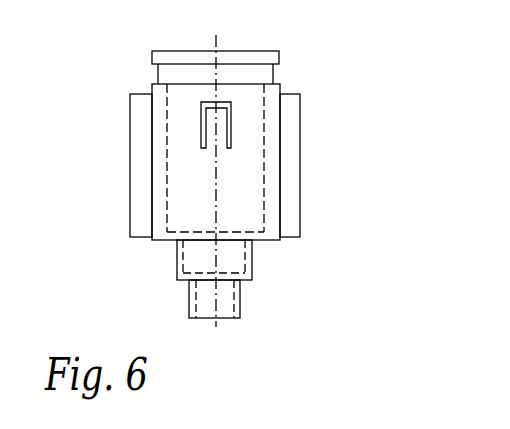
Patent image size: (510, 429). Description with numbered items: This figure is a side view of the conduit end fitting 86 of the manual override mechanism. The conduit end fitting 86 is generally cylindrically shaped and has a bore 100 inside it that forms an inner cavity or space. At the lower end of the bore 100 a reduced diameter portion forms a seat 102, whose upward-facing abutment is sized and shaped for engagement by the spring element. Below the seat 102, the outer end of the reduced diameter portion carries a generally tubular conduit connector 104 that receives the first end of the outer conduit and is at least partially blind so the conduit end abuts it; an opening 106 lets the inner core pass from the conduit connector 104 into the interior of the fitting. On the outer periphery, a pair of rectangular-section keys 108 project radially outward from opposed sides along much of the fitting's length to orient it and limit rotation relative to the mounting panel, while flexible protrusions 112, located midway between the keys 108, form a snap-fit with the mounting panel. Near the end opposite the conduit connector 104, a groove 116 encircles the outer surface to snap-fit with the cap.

The conduit end fitting 86 is at (252, 180).
The bore 100 is at (255, 183).
The seat 102 is at (232, 266).
The conduit connector 104 is at (240, 307).
The opening 106 is at (198, 291).
The keys 108 is at (130, 162).
The flexible protrusions 112 is at (231, 118).
The groove 116 is at (158, 73).